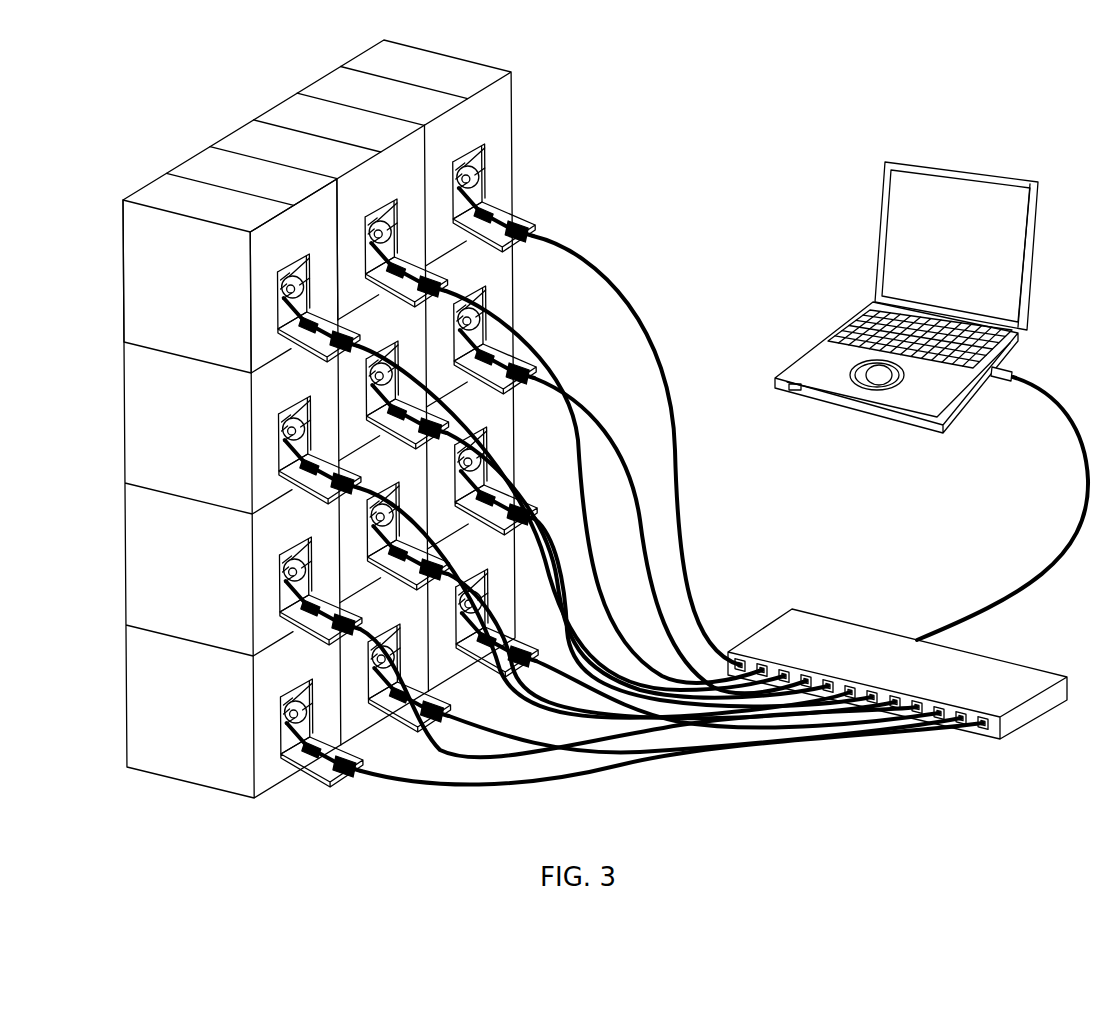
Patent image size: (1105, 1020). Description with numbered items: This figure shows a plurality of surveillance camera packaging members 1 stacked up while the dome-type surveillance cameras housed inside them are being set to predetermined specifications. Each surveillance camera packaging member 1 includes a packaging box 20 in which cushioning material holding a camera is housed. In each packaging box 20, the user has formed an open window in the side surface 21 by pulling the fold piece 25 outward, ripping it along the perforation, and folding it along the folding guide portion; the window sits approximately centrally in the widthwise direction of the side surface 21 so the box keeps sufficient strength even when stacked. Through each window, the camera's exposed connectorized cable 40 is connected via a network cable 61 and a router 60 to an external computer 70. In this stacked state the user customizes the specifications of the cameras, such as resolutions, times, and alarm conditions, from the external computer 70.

The surveillance camera packaging member 1 is at (107, 216).
The packaging box 20 is at (113, 310).
The side surface 21 is at (252, 347).
The fold piece 25 is at (218, 366).
The connectorized cable 40 is at (313, 337).
The router 60 is at (853, 628).
The network cable 61 is at (635, 298).
The external computer 70 is at (963, 163).